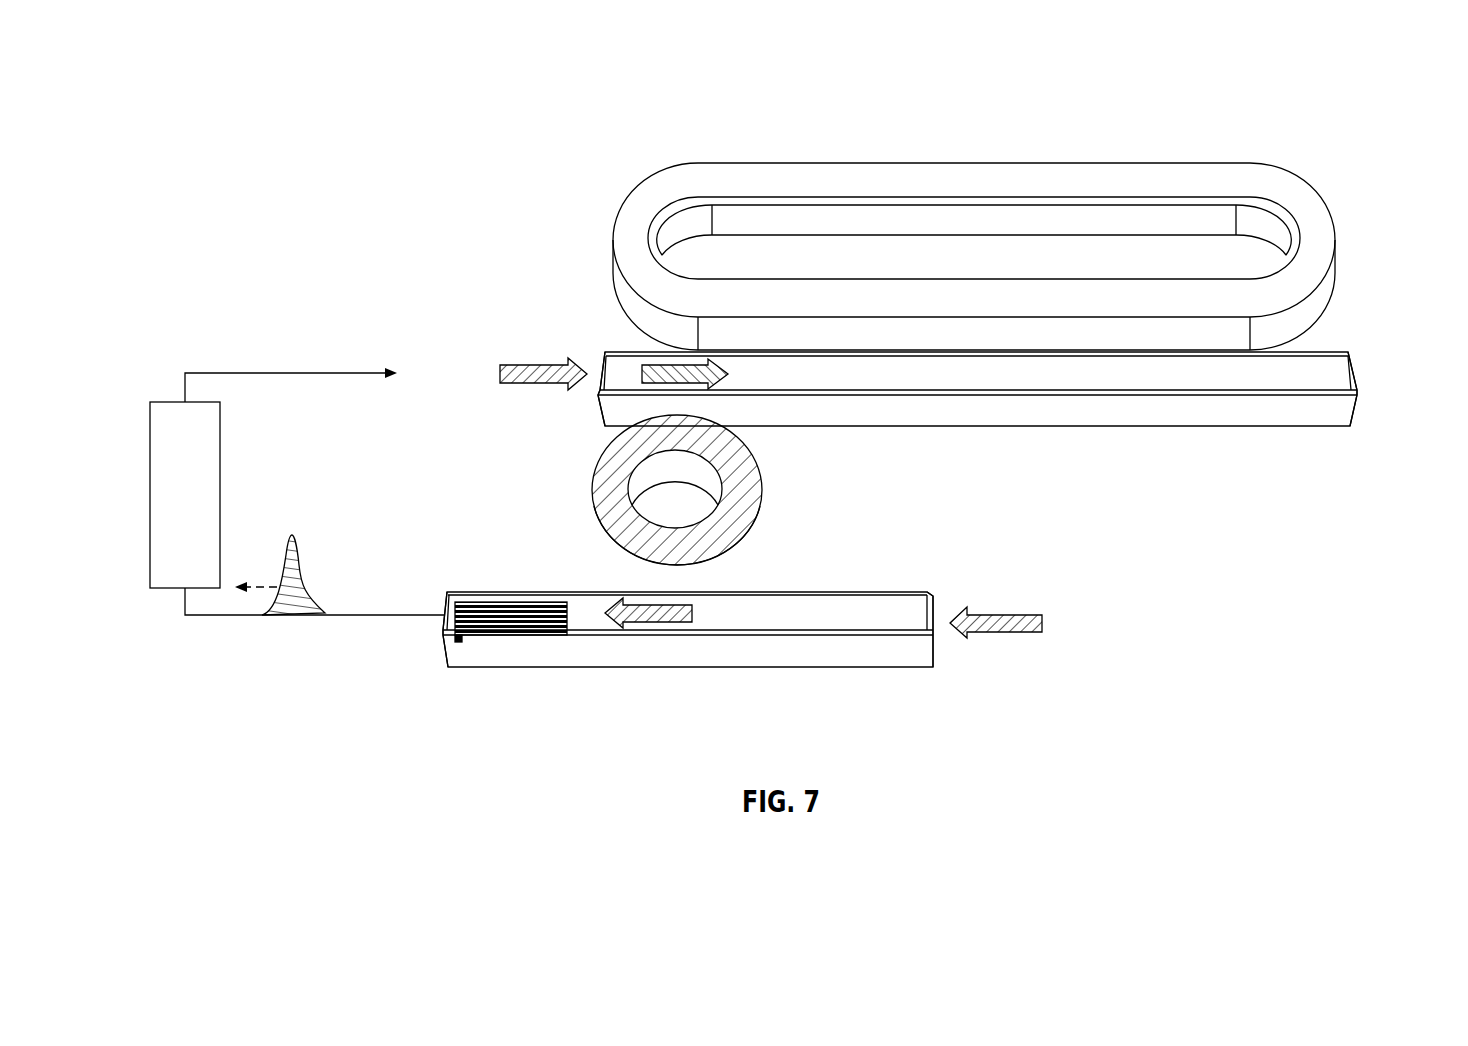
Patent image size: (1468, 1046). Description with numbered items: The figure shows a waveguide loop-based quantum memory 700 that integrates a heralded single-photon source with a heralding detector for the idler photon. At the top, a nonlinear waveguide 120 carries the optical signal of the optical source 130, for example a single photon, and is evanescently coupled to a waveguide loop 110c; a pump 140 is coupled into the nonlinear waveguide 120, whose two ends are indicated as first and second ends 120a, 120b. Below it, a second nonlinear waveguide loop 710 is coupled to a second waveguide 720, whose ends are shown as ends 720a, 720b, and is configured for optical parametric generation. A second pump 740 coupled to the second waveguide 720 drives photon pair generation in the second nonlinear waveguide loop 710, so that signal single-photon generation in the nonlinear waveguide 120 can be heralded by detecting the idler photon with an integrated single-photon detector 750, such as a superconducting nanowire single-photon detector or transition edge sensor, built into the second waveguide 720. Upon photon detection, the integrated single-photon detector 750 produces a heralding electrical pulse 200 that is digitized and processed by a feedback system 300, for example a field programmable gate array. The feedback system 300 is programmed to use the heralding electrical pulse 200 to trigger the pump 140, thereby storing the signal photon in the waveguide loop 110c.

The waveguide loop-based quantum memory 700 is at (536, 157).
The waveguide loop 110c is at (1220, 180).
The nonlinear waveguide 120 is at (1001, 384).
The first end of signal waveguide 120a is at (600, 358).
The second end of signal waveguide 120b is at (1357, 373).
The optical source 130 is at (700, 383).
The pump 140 is at (537, 363).
The second nonlinear waveguide loop 710 is at (592, 478).
The second waveguide 720 is at (666, 679).
The first end of idler waveguide 720a is at (933, 647).
The second end of idler waveguide 720b is at (445, 658).
The second pump 740 is at (1002, 632).
The integrated single-photon detector 750 is at (508, 635).
The heralding electrical pulse 200 is at (288, 603).
The feedback system 300 is at (148, 497).